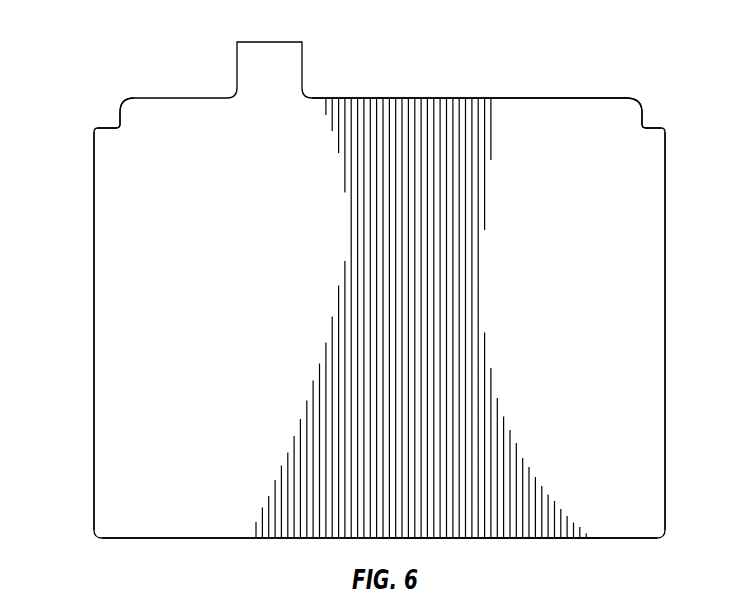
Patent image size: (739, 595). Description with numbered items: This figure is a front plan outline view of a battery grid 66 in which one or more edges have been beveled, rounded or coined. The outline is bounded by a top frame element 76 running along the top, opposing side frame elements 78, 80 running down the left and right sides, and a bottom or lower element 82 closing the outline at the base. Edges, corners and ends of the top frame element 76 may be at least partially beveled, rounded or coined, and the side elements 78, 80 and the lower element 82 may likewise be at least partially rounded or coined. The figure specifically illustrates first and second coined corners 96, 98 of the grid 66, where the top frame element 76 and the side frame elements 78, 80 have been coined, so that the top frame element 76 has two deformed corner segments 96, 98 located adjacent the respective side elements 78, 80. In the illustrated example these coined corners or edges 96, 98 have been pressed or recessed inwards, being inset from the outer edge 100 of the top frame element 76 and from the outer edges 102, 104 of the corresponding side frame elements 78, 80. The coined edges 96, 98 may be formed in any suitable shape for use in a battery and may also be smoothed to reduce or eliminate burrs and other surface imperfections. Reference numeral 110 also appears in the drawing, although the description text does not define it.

The grid 66 is at (616, 67).
The top frame element 76 is at (437, 98).
The side frame element 78 is at (93, 332).
The side frame element 80 is at (666, 363).
The bottom or lower element 82 is at (562, 539).
The first coined corner 96 is at (119, 110).
The second coined corner 98 is at (641, 109).
The outer edge of the top frame element 100 is at (571, 95).
The outer edge of side frame element 102 is at (91, 221).
The outer edge of side frame element 104 is at (668, 261).
The lower portion 110 is at (496, 566).